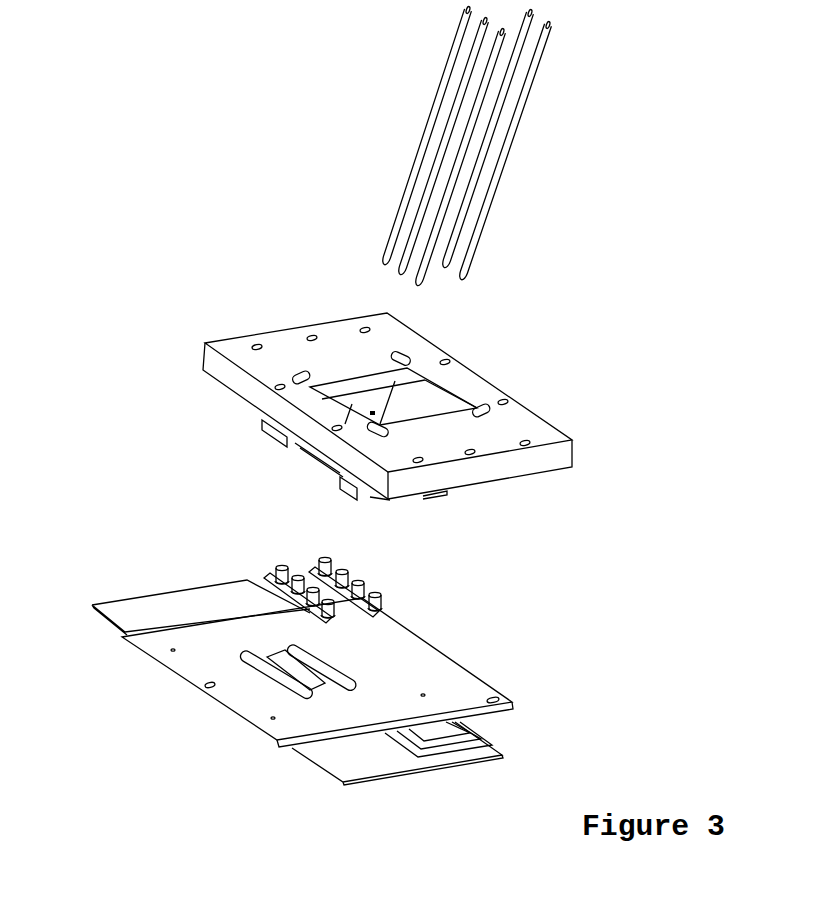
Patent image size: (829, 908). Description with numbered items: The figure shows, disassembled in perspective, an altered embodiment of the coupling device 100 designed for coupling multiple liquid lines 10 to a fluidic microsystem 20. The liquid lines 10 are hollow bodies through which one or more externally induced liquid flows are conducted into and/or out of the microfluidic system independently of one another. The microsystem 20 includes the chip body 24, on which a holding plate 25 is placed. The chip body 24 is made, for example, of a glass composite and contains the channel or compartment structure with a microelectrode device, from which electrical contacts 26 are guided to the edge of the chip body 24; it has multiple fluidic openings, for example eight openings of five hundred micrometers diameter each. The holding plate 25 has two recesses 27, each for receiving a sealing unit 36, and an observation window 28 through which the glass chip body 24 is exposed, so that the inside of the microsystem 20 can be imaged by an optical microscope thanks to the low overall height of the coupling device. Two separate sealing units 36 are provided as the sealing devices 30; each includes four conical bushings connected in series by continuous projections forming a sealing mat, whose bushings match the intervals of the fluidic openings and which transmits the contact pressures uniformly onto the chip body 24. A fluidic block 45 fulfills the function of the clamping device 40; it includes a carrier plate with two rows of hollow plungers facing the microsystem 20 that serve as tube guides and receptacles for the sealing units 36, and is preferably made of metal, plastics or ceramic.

The liquid lines 10 is at (364, 118).
The microsystem 20 is at (353, 659).
The chip body 24 is at (401, 776).
The holding plate 25 is at (250, 712).
The electrical contacts 26 is at (433, 750).
The recesses 27 is at (330, 669).
The observation window 28 is at (258, 656).
The sealing devices 30 is at (321, 555).
The sealing units 36 is at (275, 566).
The clamping device 40 is at (422, 406).
The fluidic block 45 is at (540, 428).
The coupling device 100 is at (156, 500).